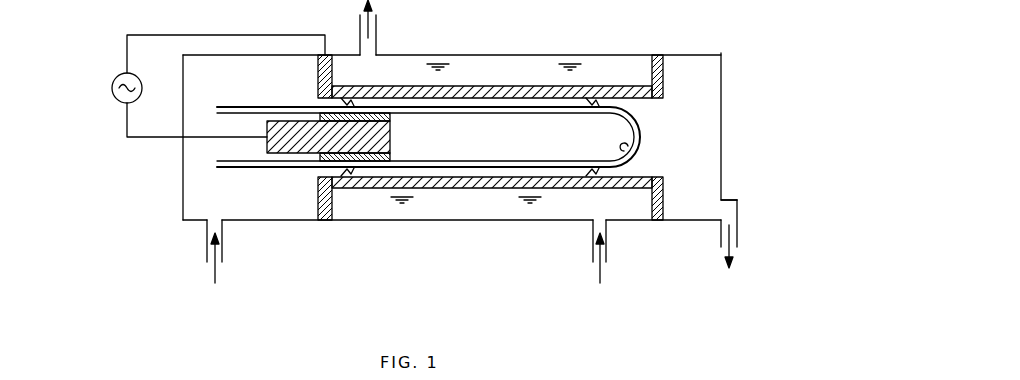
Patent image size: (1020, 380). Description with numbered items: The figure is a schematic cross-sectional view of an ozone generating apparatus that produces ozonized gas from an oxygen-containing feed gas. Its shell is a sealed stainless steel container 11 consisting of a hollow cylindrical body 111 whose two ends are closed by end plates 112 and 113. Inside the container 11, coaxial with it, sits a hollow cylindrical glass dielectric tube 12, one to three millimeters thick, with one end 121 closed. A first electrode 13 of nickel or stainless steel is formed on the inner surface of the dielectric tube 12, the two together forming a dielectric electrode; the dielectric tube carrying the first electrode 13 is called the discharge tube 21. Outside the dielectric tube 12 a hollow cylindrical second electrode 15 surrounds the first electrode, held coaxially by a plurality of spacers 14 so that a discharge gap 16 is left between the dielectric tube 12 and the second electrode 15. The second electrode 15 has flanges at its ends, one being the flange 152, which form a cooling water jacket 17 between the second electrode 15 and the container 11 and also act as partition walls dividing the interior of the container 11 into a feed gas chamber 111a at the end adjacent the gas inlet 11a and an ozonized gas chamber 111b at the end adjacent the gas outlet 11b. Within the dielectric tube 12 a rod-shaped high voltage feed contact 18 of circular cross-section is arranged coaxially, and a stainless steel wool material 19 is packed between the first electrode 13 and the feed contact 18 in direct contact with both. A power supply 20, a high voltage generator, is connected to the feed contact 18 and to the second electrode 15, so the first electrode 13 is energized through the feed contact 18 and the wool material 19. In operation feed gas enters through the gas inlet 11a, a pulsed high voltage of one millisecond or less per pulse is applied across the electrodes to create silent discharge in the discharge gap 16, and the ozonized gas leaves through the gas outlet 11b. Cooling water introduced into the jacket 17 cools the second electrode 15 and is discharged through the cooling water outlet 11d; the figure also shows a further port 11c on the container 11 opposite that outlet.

The sealed container 11 is at (459, 141).
The hollow cylindrical body 111 is at (622, 53).
The end plate 112 is at (183, 168).
The end plate 113 is at (722, 118).
The feed gas chamber 111a is at (258, 210).
The ozonized gas chamber 111b is at (707, 180).
The gas inlet 11a is at (206, 245).
The gas outlet 11b is at (720, 243).
The second inlet 11c is at (591, 245).
The cooling water outlet 11d is at (359, 30).
The dielectric tube 12 is at (455, 137).
The closed end 121 is at (640, 117).
The first electrode 13 is at (637, 157).
The discharge tube 21 is at (465, 138).
The spacers 14 is at (343, 189).
The second electrode 15 is at (435, 190).
The discharge gap 16 is at (505, 105).
The cooling water jacket 17 is at (400, 63).
The feed contact 18 is at (281, 151).
The stainless steel wool material 19 is at (390, 122).
The power supply 20 is at (111, 88).
The flange 152 is at (667, 73).